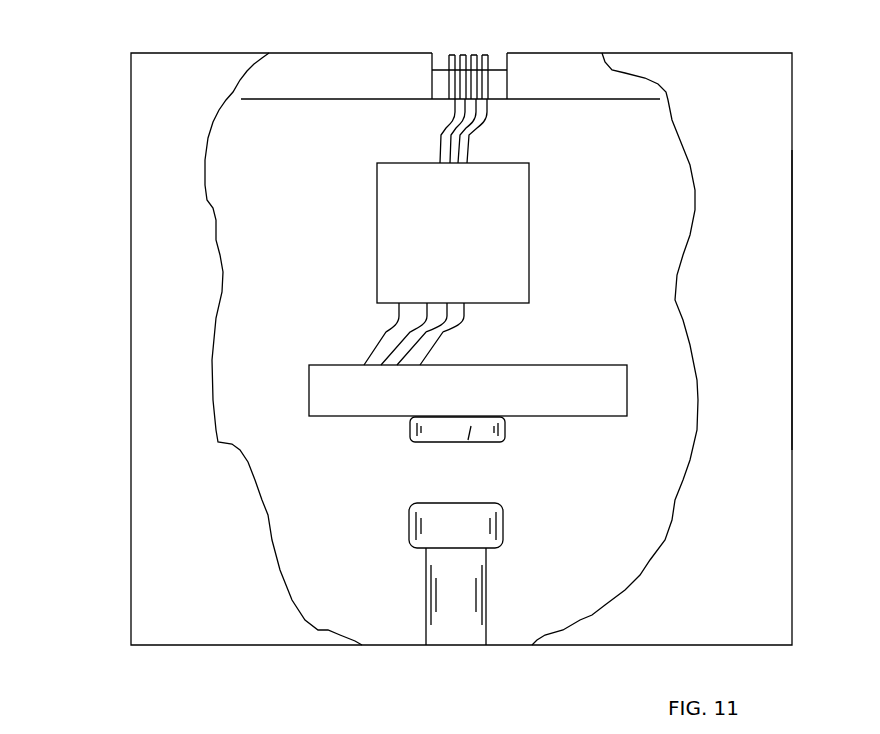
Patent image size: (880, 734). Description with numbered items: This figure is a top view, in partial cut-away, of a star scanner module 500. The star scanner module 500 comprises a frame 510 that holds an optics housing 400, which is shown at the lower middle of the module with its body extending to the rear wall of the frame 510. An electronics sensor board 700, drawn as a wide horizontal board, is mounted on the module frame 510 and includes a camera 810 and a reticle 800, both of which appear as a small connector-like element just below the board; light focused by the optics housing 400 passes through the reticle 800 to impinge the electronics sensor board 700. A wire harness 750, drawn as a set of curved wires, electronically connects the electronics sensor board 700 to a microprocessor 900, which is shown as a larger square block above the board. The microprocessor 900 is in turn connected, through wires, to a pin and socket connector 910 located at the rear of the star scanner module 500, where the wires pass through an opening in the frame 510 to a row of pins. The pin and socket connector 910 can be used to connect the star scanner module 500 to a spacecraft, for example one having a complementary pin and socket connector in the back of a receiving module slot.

The star scanner module 500 is at (107, 82).
The frame 510 is at (792, 295).
The pin and socket connector 910 is at (503, 83).
The microprocessor 900 is at (453, 233).
The wire harness 750 is at (375, 334).
The electronics sensor board 700 is at (468, 390).
The reticle 800 is at (446, 442).
The camera 810 is at (468, 440).
The optics housing 400 is at (409, 528).